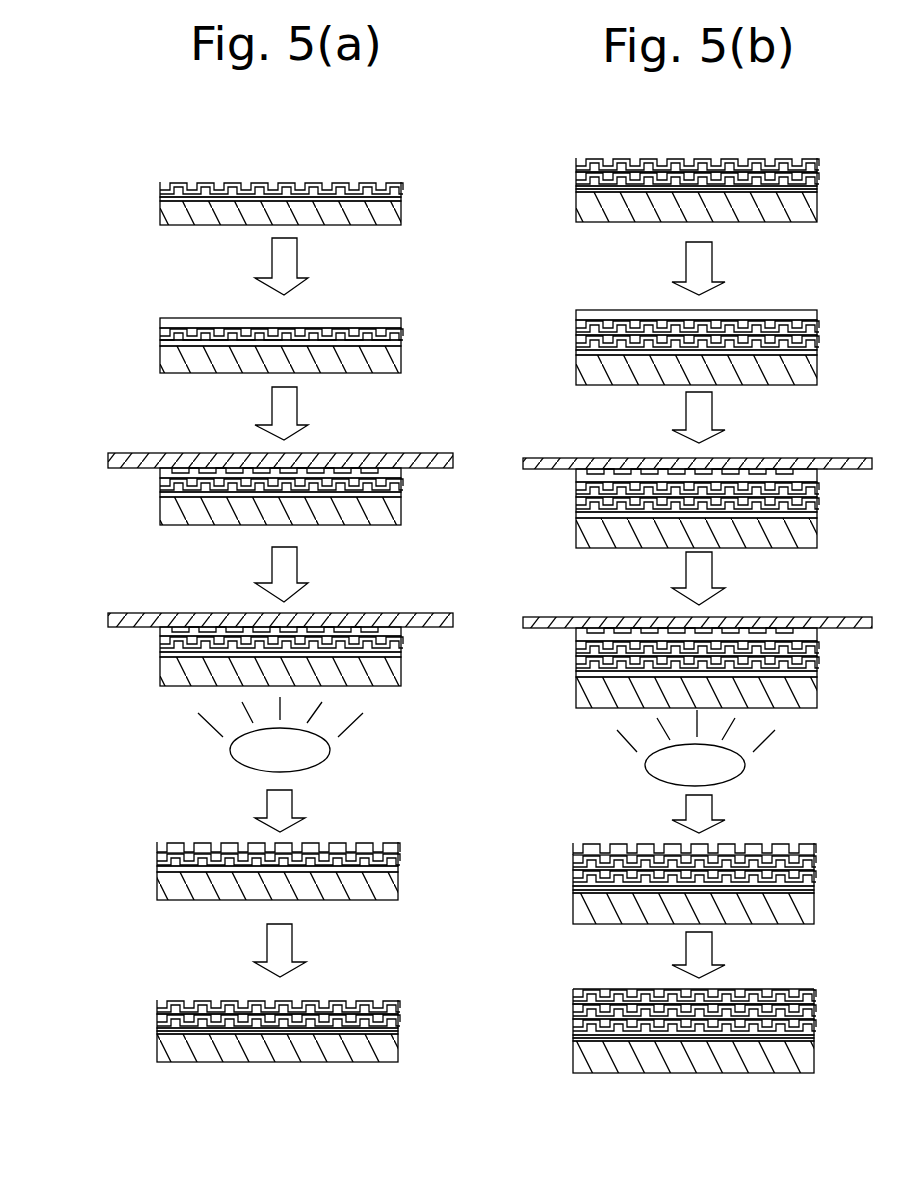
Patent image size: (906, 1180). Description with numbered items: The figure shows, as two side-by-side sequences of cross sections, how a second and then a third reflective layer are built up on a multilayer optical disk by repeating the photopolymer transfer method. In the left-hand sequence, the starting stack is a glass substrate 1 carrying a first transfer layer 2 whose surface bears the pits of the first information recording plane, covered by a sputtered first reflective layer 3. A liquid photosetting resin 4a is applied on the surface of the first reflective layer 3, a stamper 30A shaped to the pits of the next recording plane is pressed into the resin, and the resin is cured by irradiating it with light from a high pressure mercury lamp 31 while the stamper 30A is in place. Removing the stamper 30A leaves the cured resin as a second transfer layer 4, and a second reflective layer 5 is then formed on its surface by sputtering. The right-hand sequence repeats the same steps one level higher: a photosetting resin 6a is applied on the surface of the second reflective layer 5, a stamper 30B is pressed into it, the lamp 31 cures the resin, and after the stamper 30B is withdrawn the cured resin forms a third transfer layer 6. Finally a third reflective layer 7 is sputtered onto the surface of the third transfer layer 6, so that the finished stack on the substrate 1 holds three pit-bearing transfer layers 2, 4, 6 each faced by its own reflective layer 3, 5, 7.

In FIG. 5A, the glass substrate 1 is at (160, 208).
In FIG. 5B, the glass substrate 1 is at (576, 208).
In FIG. 5A, the first transfer layer 2 is at (160, 198).
In FIG. 5B, the first transfer layer 2 is at (576, 192).
In FIG. 5A, the first reflective layer 3 is at (160, 184).
In FIG. 5B, the first reflective layer 3 is at (576, 188).
In FIG. 5A, the second transfer layer 4 is at (157, 846).
In FIG. 5B, the second transfer layer 4 is at (576, 176).
In FIG. 5A, the photosetting resin 4a is at (160, 322).
In FIG. 5A, the second reflective layer 5 is at (157, 1003).
In FIG. 5B, the second reflective layer 5 is at (576, 162).
In FIG. 5B, the third transfer layer 6 is at (573, 848).
In FIG. 5B, the photosetting resin 6a is at (576, 313).
In FIG. 5B, the third reflective layer 7 is at (573, 993).
In FIG. 5A, the stamper 30A is at (108, 456).
In FIG. 5B, the stamper 30B is at (550, 458).
In FIG. 5A, the high pressure mercury lamp 31 is at (330, 752).
In FIG. 5B, the high pressure mercury lamp 31 is at (745, 770).